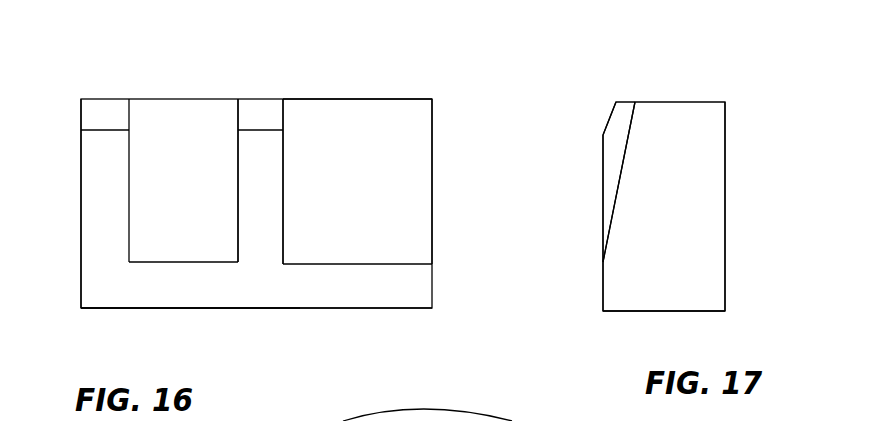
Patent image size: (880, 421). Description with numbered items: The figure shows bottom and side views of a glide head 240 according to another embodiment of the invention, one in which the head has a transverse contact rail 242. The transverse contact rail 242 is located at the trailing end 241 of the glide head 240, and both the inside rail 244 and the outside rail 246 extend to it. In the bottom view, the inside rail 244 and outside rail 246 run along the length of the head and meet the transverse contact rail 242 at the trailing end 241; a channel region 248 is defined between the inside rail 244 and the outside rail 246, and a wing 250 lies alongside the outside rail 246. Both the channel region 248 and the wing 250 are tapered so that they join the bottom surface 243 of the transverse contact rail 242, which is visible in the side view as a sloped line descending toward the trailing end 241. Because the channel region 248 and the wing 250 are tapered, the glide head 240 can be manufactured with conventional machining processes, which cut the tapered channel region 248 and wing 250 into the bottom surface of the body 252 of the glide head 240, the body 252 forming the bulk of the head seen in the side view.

In FIG. 16, the glide head 240 is at (460, 69).
In FIG. 17, the glide head 240 is at (762, 80).
In FIG. 16, the trailing end 241 is at (366, 310).
In FIG. 16, the transverse contact rail 242 is at (166, 297).
In FIG. 17, the transverse contact rail 242 is at (603, 299).
In FIG. 17, the bottom surface 243 is at (590, 258).
In FIG. 16, the inside rail 244 is at (88, 168).
In FIG. 16, the outside rail 246 is at (273, 166).
In FIG. 17, the outside rail 246 is at (603, 169).
In FIG. 16, the channel region 248 is at (182, 110).
In FIG. 16, the wing 250 is at (360, 110).
In FIG. 17, the wing 250 is at (625, 151).
In FIG. 17, the body 252 is at (725, 258).